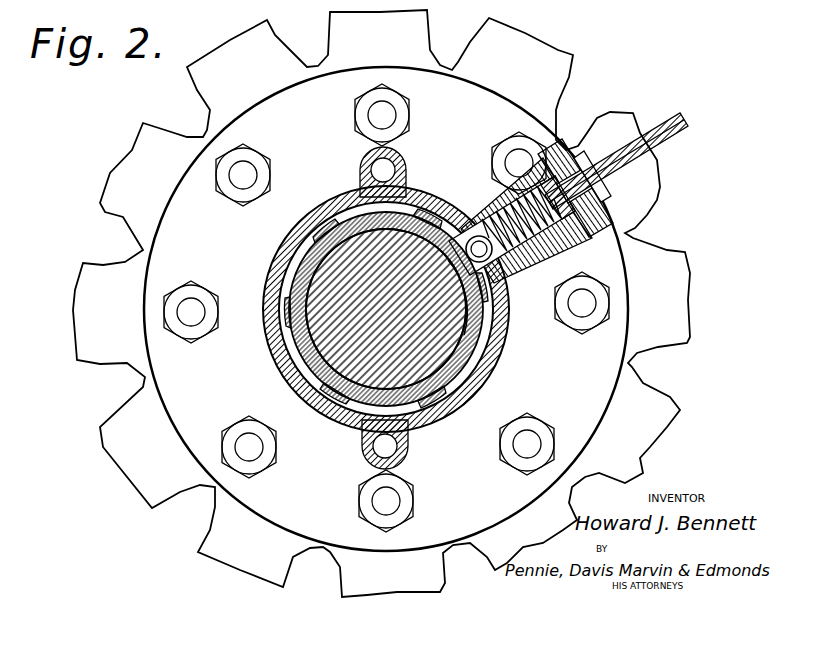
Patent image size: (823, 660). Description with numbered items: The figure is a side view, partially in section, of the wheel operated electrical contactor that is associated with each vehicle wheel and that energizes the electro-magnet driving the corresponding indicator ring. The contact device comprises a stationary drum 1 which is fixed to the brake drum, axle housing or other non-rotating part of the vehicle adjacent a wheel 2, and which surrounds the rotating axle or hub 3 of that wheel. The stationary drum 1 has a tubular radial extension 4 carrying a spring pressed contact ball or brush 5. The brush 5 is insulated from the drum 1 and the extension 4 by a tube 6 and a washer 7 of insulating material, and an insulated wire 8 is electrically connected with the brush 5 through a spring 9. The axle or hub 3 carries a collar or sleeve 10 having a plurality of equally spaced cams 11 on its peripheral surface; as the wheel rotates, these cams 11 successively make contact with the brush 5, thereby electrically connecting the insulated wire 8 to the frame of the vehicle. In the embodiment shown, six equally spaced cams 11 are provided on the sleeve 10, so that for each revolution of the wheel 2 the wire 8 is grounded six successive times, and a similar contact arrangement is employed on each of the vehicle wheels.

The stationary drum 1 is at (269, 318).
The wheel 2 is at (100, 353).
The axle or hub 3 is at (320, 320).
The tubular radial extension 4 is at (514, 262).
The contact ball or brush 5 is at (468, 234).
The tube 6 is at (506, 212).
The washer 7 is at (579, 172).
The insulated wire 8 is at (678, 148).
The spring 9 is at (578, 247).
The collar or sleeve 10 is at (462, 342).
The cams 11 is at (331, 230).